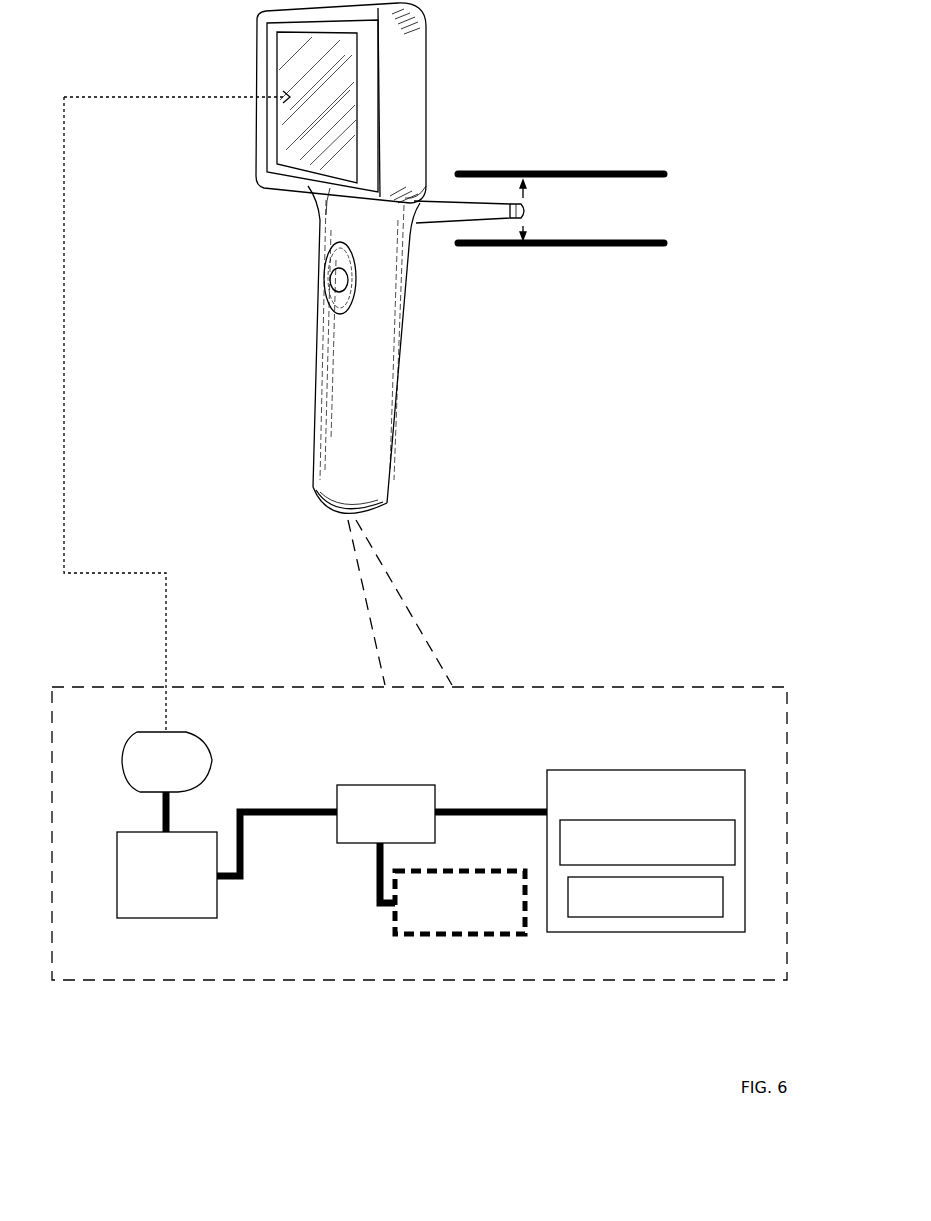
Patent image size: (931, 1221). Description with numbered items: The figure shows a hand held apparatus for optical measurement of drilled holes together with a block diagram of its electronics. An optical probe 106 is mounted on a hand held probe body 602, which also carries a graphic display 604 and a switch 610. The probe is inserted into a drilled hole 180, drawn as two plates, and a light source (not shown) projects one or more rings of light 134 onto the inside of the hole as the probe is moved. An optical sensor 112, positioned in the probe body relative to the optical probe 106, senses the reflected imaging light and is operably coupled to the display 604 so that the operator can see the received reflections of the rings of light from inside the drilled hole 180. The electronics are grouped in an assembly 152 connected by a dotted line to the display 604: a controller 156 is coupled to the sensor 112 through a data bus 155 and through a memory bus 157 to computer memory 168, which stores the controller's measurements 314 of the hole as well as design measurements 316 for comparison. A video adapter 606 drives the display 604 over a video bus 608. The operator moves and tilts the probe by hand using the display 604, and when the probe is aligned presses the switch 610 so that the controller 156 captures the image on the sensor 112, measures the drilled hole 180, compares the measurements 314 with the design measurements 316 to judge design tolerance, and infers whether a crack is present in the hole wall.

The optical probe 106 is at (478, 180).
The drilled hole 180 is at (628, 155).
The rings of light 134 is at (531, 224).
The hand held probe body 602 is at (226, 237).
The graphic display 604 is at (250, 406).
The switch 610 is at (318, 304).
The computing system 152 is at (419, 833).
The video adapter 606 is at (167, 855).
The video bus 608 is at (277, 855).
The controller 156 is at (386, 814).
The memory bus 157 is at (491, 798).
The data bus 155 is at (366, 884).
The optical sensor 112 is at (460, 902).
The computer memory 168 is at (646, 851).
The measurements 314 is at (647, 842).
The design measurements 316 is at (645, 897).